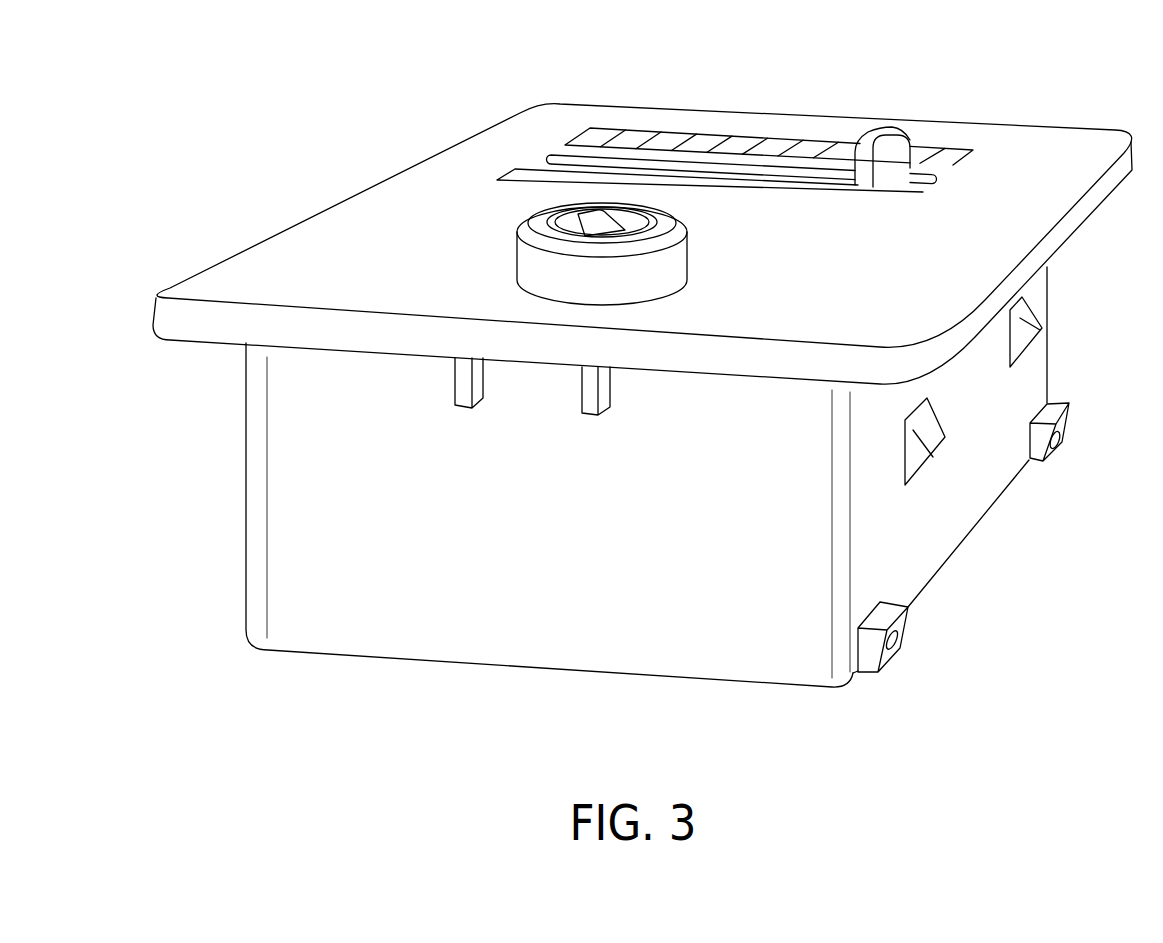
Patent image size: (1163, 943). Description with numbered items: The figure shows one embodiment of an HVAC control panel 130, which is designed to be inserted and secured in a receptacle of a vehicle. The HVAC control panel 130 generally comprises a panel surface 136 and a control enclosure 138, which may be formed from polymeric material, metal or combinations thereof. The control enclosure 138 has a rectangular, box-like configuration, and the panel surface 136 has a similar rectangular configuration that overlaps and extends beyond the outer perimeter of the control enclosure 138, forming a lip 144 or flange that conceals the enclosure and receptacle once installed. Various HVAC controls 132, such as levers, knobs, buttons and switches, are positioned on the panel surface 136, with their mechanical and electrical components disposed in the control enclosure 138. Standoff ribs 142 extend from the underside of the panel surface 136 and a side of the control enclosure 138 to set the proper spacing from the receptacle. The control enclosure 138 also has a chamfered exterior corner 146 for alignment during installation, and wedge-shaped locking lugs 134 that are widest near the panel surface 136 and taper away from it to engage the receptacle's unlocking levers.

The HVAC control panel 130 is at (639, 348).
The HVAC controls 132 is at (497, 178).
The locking lugs 134 is at (1065, 415).
The panel surface 136 is at (1020, 127).
The control enclosure 138 is at (318, 620).
The standoff ribs 142 is at (457, 394).
The lip 144 is at (185, 352).
The chamfered exterior corner 146 is at (1047, 305).